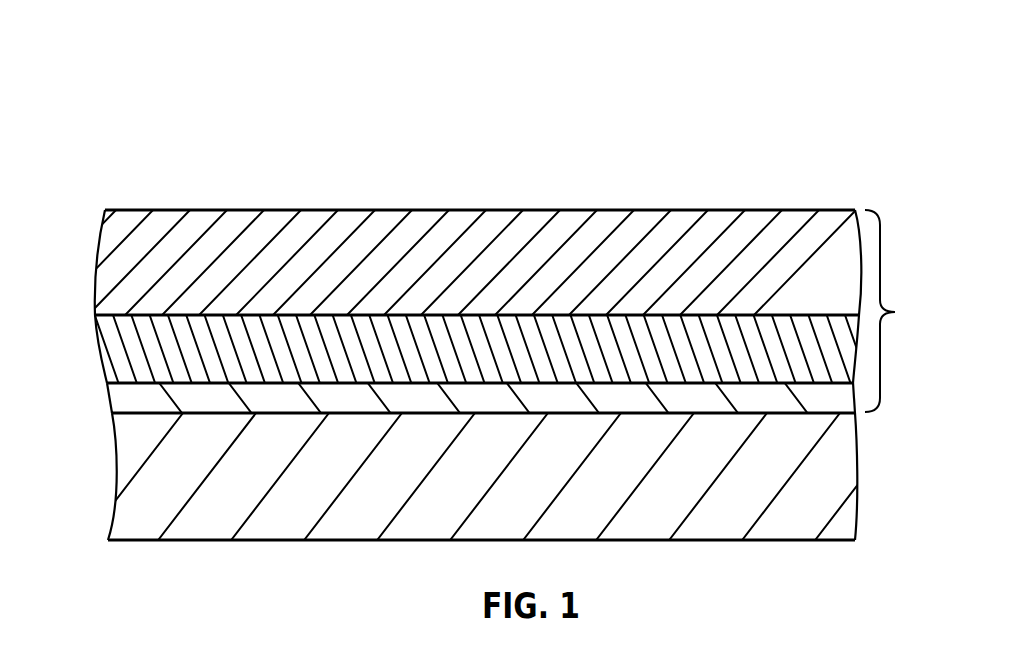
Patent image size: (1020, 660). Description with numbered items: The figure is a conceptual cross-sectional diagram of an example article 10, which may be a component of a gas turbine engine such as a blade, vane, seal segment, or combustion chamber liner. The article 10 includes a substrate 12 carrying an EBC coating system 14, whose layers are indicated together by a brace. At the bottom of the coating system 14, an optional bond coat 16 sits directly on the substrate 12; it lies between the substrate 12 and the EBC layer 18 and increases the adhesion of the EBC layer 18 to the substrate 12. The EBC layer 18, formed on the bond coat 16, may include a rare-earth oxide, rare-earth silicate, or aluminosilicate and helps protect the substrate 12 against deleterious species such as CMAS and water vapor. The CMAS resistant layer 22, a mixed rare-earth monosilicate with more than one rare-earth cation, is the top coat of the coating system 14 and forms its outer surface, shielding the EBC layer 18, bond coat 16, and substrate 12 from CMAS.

The article 10 is at (770, 128).
The substrate 12 is at (117, 480).
The EBC coating system 14 is at (898, 311).
The bond coat 16 is at (128, 399).
The EBC layer 18 is at (102, 353).
The CMAS resistant layer 22 is at (97, 262).